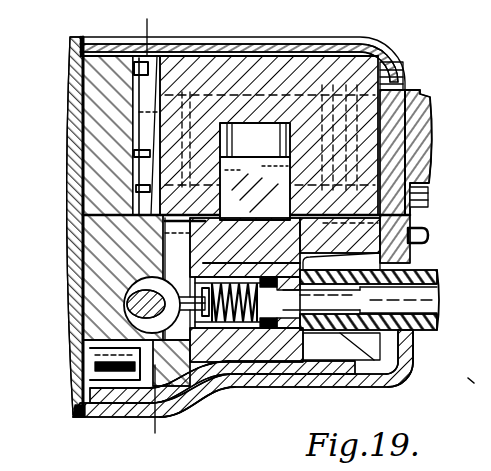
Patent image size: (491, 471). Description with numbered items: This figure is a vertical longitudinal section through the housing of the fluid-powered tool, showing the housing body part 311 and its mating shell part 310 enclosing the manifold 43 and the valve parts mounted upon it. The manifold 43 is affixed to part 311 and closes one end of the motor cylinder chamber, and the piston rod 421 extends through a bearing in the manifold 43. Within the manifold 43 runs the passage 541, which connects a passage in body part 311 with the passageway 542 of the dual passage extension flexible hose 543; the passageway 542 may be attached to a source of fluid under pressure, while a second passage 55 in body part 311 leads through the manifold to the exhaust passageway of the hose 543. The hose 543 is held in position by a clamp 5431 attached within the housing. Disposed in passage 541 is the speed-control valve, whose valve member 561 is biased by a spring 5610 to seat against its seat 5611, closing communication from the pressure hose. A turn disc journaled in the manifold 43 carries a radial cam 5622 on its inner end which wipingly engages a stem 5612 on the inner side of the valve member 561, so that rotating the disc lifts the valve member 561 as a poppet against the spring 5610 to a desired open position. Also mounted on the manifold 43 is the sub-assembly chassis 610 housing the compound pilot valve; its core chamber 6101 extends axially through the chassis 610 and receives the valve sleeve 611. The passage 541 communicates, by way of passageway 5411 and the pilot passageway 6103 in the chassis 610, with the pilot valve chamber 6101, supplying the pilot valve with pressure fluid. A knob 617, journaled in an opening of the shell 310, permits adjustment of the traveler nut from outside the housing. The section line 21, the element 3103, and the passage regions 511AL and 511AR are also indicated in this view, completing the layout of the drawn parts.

The section line 21- 21 is at (173, 19).
The end mating part of housing body portion 311 is at (72, 91).
The manifold 43 is at (106, 208).
The piston rod 421 is at (100, 152).
The shell part of housing body portion 310 is at (358, 40).
The pilot passageway 6103 is at (240, 158).
The valve sleeve 611 is at (212, 36).
The core chamber 6101 is at (300, 40).
The sub-assembly chassis 610 is at (389, 60).
The knob 617 is at (425, 97).
The set screw 3103 is at (421, 230).
The right passage block 511AR is at (113, 295).
The left passage stem 511AL is at (110, 252).
The dual passage extension flexible hose 543 is at (452, 262).
The passageway 542 is at (417, 298).
The spring 5610 is at (284, 383).
The passage 541 is at (124, 316).
The passageway 5411 is at (126, 305).
The radial cam 5622 is at (98, 349).
The valve seat 5611 is at (228, 371).
The valve member 561 is at (208, 355).
The valve stem 5612 is at (224, 393).
The clamp 5431 is at (352, 379).
The passage 55 is at (478, 369).